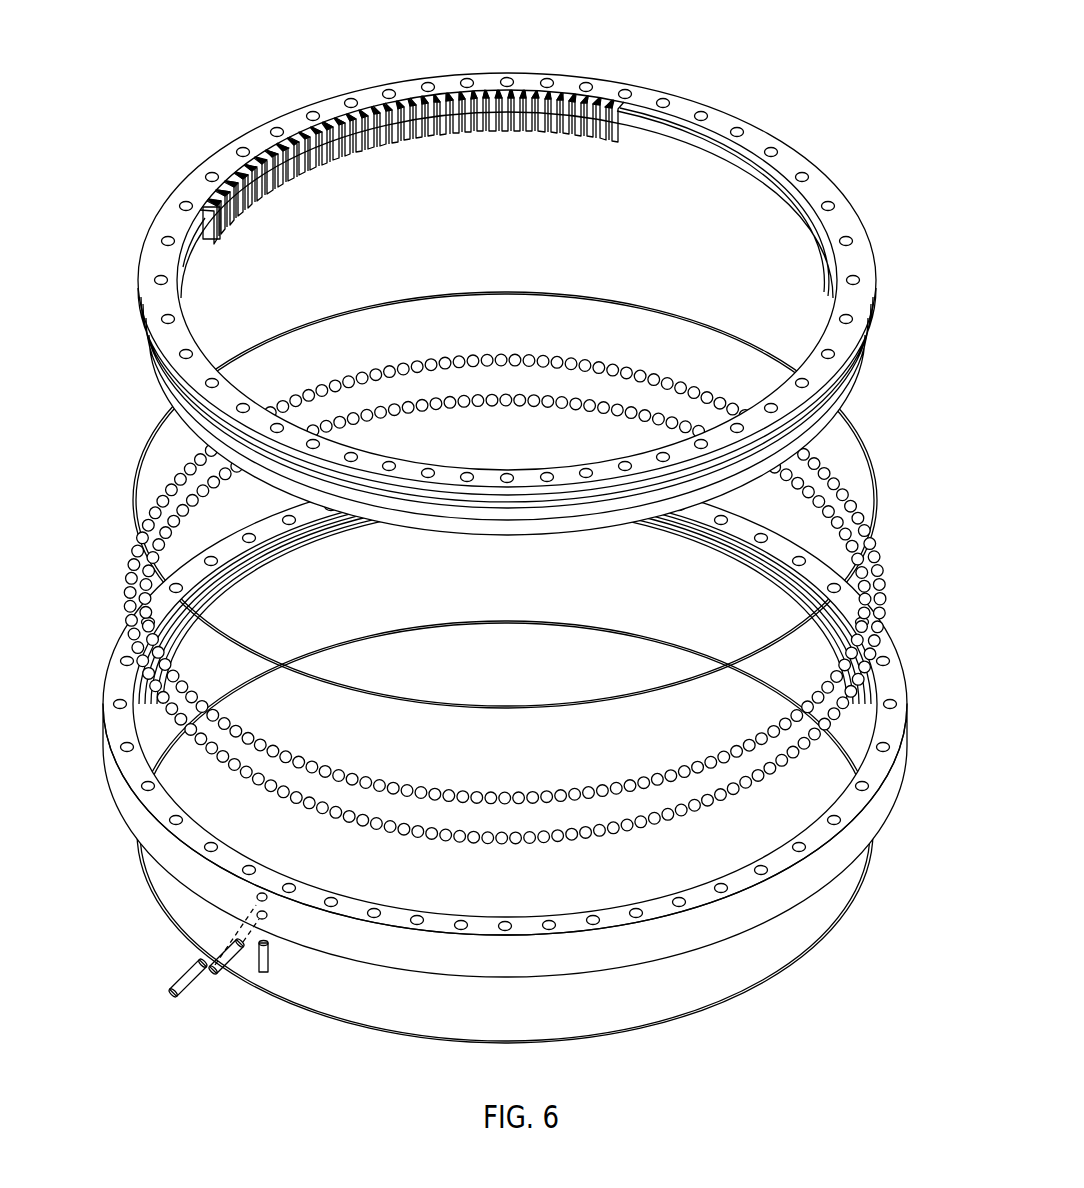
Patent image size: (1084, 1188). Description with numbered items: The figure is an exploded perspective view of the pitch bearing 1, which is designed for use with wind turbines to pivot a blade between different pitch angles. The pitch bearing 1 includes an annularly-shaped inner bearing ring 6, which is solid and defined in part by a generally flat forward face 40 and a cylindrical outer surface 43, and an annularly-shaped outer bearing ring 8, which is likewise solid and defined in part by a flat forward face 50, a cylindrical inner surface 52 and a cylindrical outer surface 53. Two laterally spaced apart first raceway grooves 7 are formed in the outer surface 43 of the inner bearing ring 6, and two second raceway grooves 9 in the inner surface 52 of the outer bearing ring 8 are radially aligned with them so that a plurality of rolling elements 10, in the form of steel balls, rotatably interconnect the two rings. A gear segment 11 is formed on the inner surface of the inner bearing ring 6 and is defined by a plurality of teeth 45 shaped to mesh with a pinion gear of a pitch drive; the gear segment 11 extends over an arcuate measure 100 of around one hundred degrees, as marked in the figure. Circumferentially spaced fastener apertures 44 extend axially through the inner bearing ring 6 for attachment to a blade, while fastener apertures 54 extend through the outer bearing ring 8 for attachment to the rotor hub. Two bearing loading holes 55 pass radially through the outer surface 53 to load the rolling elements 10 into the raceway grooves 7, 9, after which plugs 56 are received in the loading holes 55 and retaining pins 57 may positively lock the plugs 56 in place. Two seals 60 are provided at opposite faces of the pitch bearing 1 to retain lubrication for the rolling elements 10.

The pitch bearing 1 is at (682, 72).
The inner bearing ring 6 is at (722, 122).
The first raceway grooves 7 is at (514, 519).
The outer bearing ring 8 is at (893, 685).
The second raceway grooves 9 is at (302, 537).
The rolling elements 10 is at (427, 830).
The gear segment 11 is at (623, 138).
The forward face 40 is at (820, 187).
The outer surface 43 is at (150, 365).
The fastener apertures 44 is at (243, 142).
The teeth 45 is at (504, 130).
The forward face 50 is at (121, 676).
The inner surface 52 is at (255, 585).
The outer surface 53 is at (135, 802).
The fastener apertures 54 is at (252, 865).
The bearing loading holes 55 is at (257, 897).
The plugs 56 is at (218, 978).
The retaining pins 57 is at (270, 955).
The seal 60 is at (850, 908).
The angular extent of gear segment (100 degrees) 100 is at (620, 143).